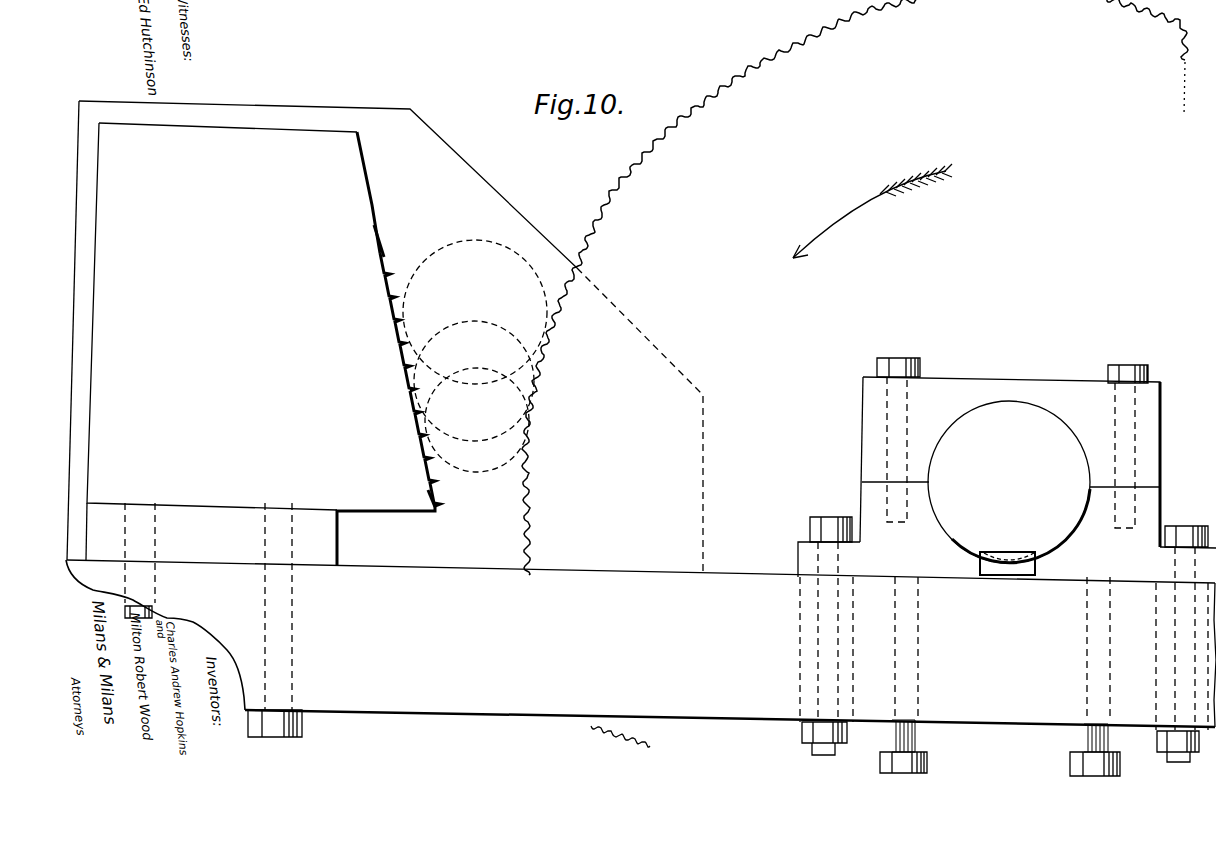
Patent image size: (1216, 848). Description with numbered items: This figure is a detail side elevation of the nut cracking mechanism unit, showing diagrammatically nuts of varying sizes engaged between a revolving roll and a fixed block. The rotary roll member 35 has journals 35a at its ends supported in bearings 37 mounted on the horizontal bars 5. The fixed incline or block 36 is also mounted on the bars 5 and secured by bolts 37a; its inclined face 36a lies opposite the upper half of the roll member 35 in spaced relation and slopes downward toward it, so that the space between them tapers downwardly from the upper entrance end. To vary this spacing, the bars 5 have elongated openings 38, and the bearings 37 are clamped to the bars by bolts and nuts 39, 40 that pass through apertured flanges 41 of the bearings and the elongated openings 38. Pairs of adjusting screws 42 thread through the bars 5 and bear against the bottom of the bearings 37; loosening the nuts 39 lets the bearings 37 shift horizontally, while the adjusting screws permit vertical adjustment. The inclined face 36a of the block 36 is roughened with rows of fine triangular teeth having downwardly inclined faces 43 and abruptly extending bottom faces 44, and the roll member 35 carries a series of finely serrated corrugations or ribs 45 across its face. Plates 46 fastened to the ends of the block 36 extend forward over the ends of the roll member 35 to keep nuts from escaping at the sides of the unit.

The horizontal bars 5 is at (641, 653).
The rotary roll member 35 is at (863, 211).
The journals 35a is at (1009, 488).
The fixed incline 36 is at (316, 344).
The inclined face 36a is at (428, 495).
The bearings 37 is at (1010, 466).
The bolts 37a is at (267, 583).
The elongated openings 38 is at (800, 648).
The bolts and nuts 39 is at (810, 528).
The bolts and nuts 40 is at (1183, 530).
The apertured flanges 41 is at (797, 556).
The adjusting screws 42 is at (1085, 742).
The downwardly inclined faces 43 is at (382, 270).
The bottom faces 44 is at (392, 303).
The corrugations or ribs 45 is at (543, 358).
The plates 46 is at (530, 235).